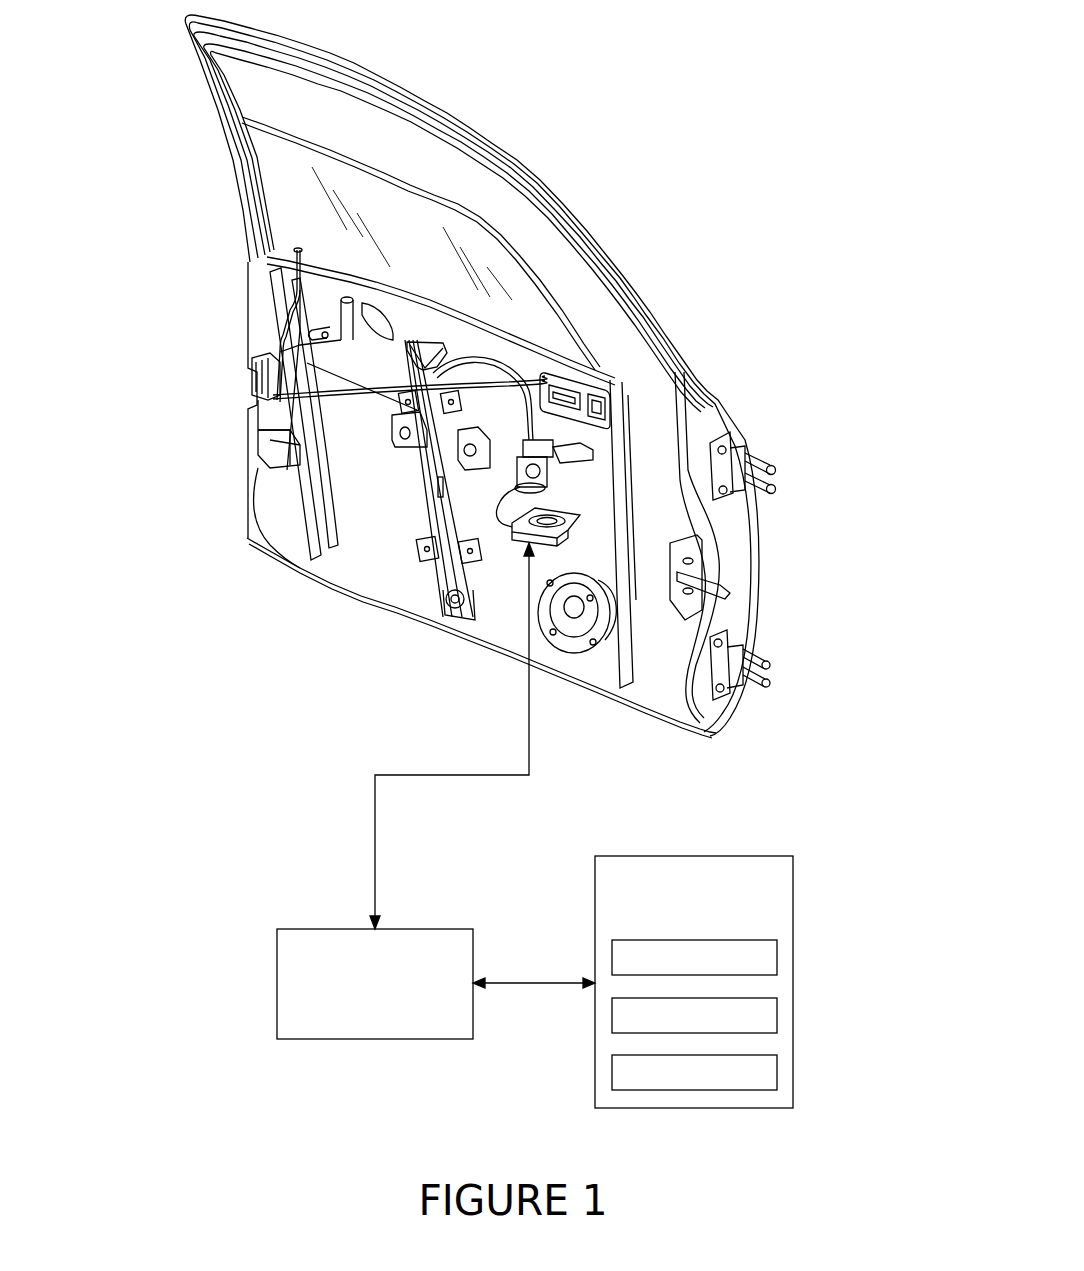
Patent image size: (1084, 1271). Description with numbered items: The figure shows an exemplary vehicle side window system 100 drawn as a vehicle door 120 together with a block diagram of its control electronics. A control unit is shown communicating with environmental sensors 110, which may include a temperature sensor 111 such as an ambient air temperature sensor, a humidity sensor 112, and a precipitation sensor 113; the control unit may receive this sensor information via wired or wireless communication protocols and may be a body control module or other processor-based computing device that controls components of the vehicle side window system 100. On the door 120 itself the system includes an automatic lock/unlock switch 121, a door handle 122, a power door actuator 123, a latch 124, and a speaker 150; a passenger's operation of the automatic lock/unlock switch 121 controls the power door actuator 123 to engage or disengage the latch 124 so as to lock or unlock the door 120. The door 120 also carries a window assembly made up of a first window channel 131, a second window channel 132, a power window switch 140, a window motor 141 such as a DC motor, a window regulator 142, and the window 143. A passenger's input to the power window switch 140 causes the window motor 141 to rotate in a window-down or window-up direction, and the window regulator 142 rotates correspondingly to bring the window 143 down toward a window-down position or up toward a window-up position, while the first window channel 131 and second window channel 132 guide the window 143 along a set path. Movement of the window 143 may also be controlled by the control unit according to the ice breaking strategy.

The vehicle side window system 100 is at (683, 118).
The environmental sensors 110 is at (763, 856).
The temperature sensor 111 is at (778, 958).
The humidity sensor 112 is at (778, 1015).
The precipitation sensor 113 is at (778, 1073).
The door 120 is at (468, 136).
The automatic lock/unlock switch 121 is at (603, 392).
The door handle 122 is at (563, 400).
The power door actuator 123 is at (268, 453).
The latch 124 is at (262, 371).
The first window channel 131 is at (633, 678).
The second window channel 132 is at (312, 522).
The power window switch 140 is at (520, 535).
The window motor 141 is at (563, 462).
The window regulator 142 is at (440, 585).
The window 143 is at (287, 185).
The speaker 150 is at (573, 645).